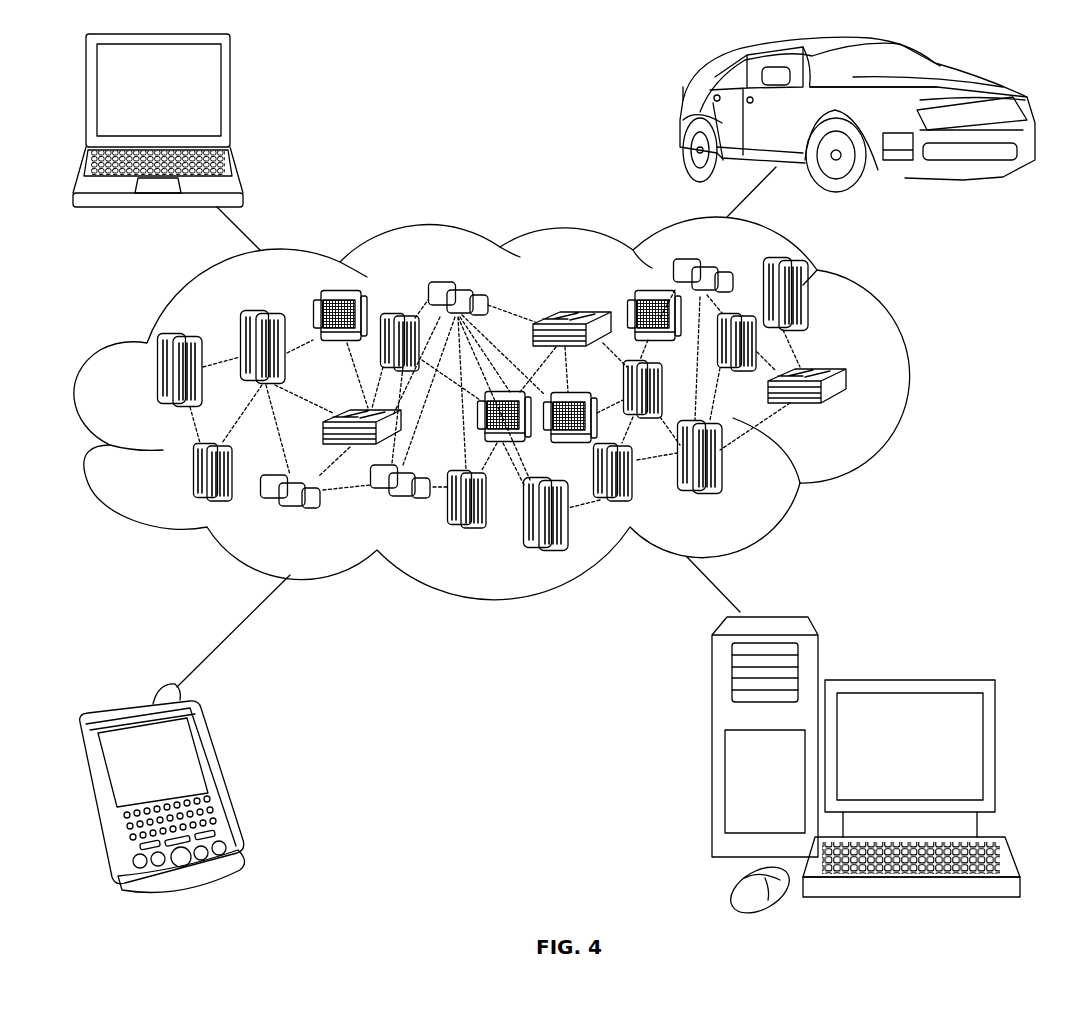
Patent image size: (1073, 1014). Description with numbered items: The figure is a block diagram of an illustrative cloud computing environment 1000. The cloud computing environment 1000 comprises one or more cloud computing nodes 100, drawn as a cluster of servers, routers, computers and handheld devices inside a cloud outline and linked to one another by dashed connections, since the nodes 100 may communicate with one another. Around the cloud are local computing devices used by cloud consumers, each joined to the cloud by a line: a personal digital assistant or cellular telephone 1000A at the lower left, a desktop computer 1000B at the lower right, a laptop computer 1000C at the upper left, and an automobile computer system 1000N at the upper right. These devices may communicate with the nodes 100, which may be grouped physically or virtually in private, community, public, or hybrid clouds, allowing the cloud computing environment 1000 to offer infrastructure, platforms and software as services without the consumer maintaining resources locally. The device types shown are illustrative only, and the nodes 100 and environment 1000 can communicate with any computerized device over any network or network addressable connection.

The cloud computing nodes 100 is at (850, 412).
The cloud computing environment 1000 is at (907, 380).
The personal digital assistant (PDA) or cellular telephone 1000A is at (220, 780).
The desktop computer 1000B is at (905, 678).
The laptop computer 1000C is at (230, 100).
The automobile computer system 1000N is at (680, 117).